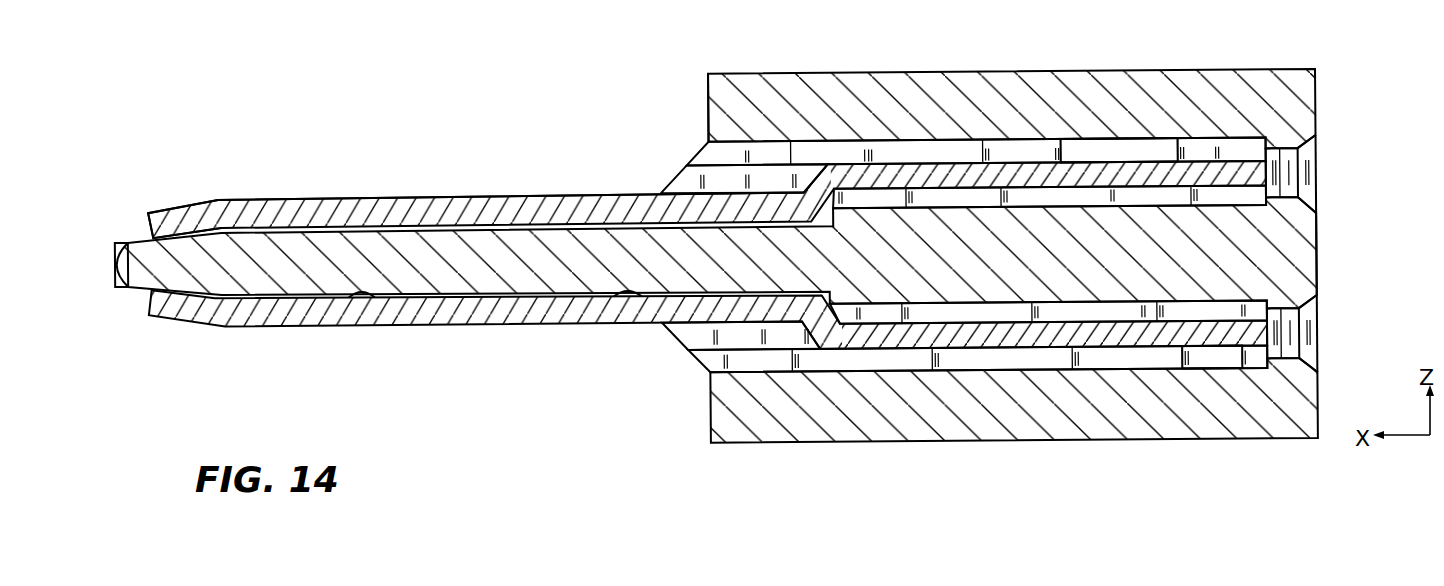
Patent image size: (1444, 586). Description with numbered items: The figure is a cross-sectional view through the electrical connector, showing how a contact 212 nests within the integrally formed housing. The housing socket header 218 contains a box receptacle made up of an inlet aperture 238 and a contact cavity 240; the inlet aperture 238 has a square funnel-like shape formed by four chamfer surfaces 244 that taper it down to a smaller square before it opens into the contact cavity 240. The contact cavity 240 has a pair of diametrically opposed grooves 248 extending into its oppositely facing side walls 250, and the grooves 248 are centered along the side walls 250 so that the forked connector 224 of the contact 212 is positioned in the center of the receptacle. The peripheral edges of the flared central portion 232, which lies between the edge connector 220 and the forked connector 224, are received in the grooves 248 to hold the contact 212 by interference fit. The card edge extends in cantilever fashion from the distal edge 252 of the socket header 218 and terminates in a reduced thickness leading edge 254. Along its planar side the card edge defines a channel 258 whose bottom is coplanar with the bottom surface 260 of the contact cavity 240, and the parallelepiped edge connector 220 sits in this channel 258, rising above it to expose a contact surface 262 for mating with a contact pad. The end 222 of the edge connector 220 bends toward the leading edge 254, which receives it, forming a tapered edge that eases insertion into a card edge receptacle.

The contact 212 is at (460, 182).
The housing socket header 218 is at (1029, 445).
The edge connector 220 is at (327, 199).
The end of the edge connector 222 is at (183, 206).
The forked connector 224 is at (1092, 190).
The flared central portion 232 is at (850, 162).
The inlet aperture 238 is at (1292, 170).
The contact cavity 240 is at (950, 153).
The chamfer surfaces 244 is at (1318, 137).
The grooves 248 is at (683, 187).
The side walls 250 is at (1132, 152).
The distal edge 252 is at (706, 95).
The leading edge 254 is at (113, 255).
The channel 258 is at (363, 294).
The bottom surface 260 is at (623, 294).
The contact surface 262 is at (542, 198).